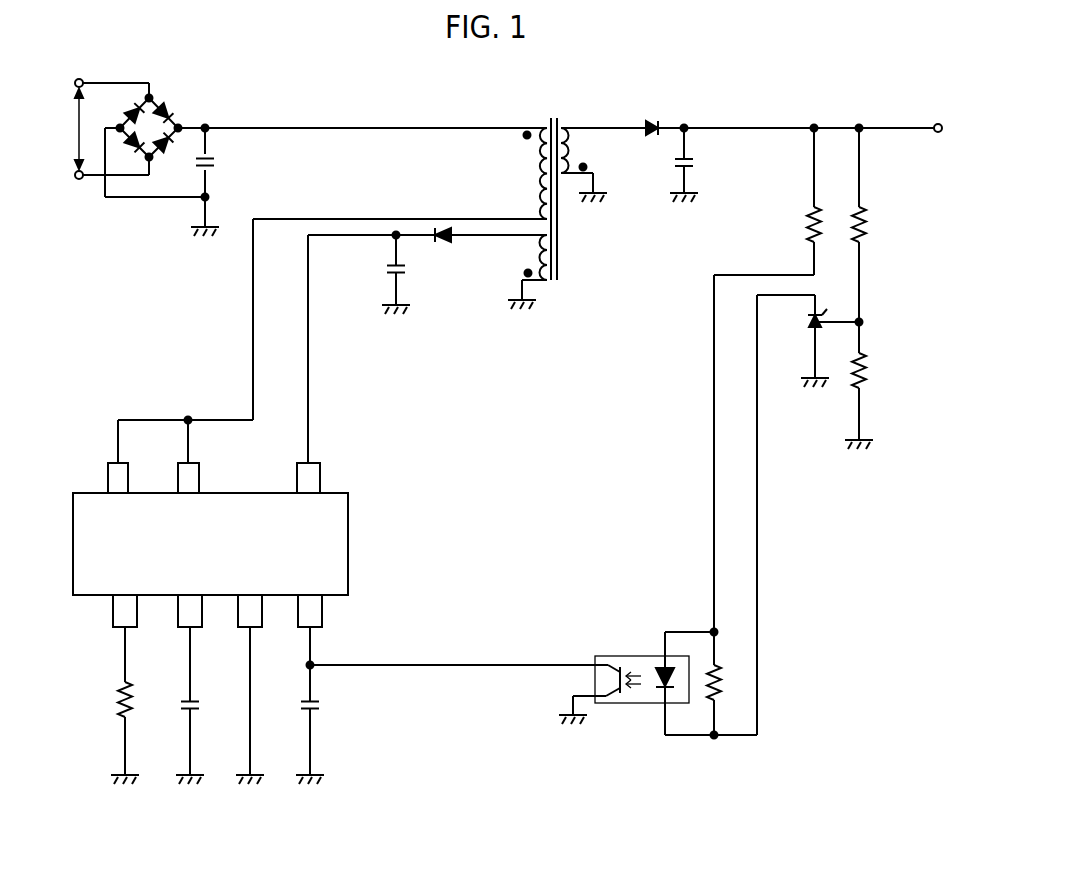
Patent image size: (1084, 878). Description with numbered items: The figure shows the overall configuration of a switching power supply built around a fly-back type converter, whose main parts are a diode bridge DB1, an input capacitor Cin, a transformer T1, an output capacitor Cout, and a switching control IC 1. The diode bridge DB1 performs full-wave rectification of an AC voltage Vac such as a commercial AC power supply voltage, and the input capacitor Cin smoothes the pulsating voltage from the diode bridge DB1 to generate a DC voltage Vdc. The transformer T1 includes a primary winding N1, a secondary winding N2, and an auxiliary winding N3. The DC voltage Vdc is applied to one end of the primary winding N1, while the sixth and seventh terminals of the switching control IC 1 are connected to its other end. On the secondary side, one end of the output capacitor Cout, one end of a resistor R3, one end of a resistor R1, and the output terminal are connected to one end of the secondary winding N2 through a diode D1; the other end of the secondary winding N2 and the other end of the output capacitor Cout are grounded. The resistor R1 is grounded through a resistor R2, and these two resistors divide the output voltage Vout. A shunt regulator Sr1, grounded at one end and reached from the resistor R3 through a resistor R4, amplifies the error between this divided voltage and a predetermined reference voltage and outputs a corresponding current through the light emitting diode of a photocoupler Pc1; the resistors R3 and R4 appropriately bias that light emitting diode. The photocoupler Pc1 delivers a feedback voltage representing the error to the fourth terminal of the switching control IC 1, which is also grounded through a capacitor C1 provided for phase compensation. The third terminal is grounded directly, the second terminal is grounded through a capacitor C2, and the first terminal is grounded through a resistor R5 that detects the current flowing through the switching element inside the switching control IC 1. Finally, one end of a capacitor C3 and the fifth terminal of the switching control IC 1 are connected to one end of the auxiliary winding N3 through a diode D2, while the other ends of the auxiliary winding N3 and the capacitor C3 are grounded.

The switching control IC 1 is at (73, 493).
The diode bridge DB1 is at (174, 101).
The input capacitor Cin is at (216, 160).
The AC voltage Vac is at (56, 129).
The DC voltage Vdc is at (375, 117).
The transformer T1 is at (443, 189).
The primary winding N1 is at (532, 173).
The secondary winding N2 is at (580, 152).
The auxiliary winding N3 is at (532, 260).
The diode D1 is at (653, 118).
The output capacitor Cout is at (698, 159).
The output voltage Vout is at (908, 115).
The resistor R1 is at (877, 232).
The resistor R2 is at (874, 372).
The resistor R3 is at (793, 232).
The resistor R4 is at (730, 686).
The resistor R5 is at (134, 700).
The shunt regulator Sr1 is at (797, 330).
The photocoupler Pc1 is at (618, 655).
The diode D2 is at (442, 250).
The capacitor C3 is at (380, 266).
The capacitor C1 is at (323, 703).
The capacitor C2 is at (203, 703).